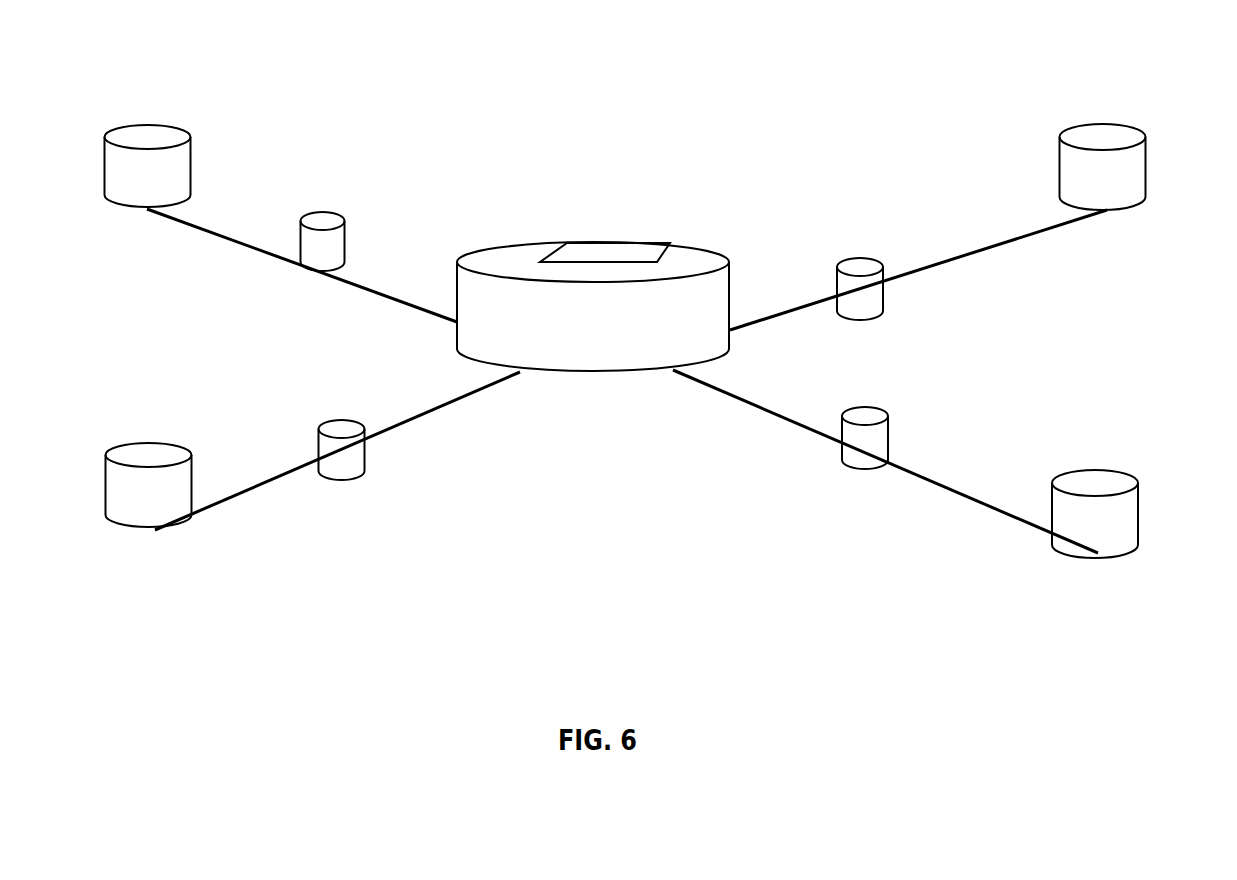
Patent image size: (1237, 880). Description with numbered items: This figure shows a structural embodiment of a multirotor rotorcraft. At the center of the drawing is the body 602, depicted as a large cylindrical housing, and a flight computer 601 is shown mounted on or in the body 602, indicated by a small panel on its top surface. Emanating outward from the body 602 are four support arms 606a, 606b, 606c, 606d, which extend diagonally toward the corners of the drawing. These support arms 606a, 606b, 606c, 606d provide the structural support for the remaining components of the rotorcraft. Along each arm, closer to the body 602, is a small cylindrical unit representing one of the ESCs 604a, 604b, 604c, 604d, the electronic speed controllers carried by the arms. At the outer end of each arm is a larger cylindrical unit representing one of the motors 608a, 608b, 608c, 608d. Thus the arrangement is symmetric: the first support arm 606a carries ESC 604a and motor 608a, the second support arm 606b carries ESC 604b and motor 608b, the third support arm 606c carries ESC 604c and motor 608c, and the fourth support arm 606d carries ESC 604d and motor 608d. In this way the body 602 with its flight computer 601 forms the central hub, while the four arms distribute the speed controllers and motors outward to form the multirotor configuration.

The flight computer 601 is at (560, 243).
The body 602 is at (725, 252).
The ESC 604a is at (882, 262).
The ESC 604b is at (887, 410).
The ESC 604c is at (340, 420).
The ESC 604d is at (337, 215).
The support arm 606a is at (973, 247).
The support arm 606b is at (967, 493).
The support arm 606c is at (237, 495).
The support arm 606d is at (230, 242).
The motor 608a is at (1143, 133).
The motor 608b is at (1137, 485).
The motor 608c is at (125, 443).
The motor 608d is at (130, 123).